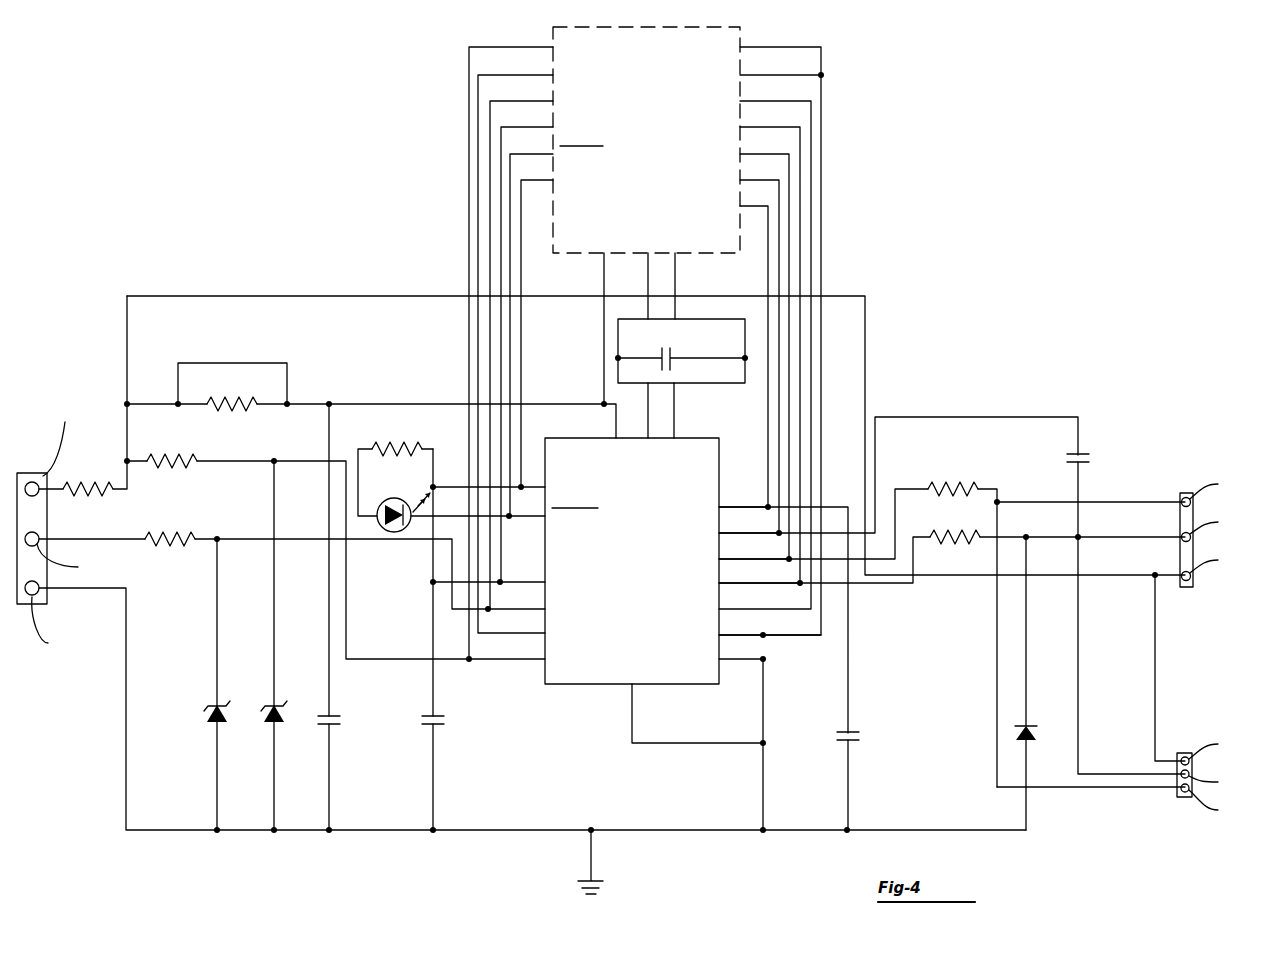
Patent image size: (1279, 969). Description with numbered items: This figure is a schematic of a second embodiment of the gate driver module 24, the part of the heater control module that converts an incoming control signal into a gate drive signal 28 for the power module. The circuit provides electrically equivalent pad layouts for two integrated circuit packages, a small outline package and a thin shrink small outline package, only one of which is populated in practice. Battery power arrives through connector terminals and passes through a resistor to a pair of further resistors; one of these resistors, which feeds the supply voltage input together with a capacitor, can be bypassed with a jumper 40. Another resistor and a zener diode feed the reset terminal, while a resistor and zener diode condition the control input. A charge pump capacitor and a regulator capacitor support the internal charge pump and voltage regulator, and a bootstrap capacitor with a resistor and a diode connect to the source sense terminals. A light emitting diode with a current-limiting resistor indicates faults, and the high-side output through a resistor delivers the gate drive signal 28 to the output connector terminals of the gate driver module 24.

The gate driver module 24 is at (990, 176).
The gate drive signal 28 is at (1103, 502).
The jumper 40 is at (260, 363).